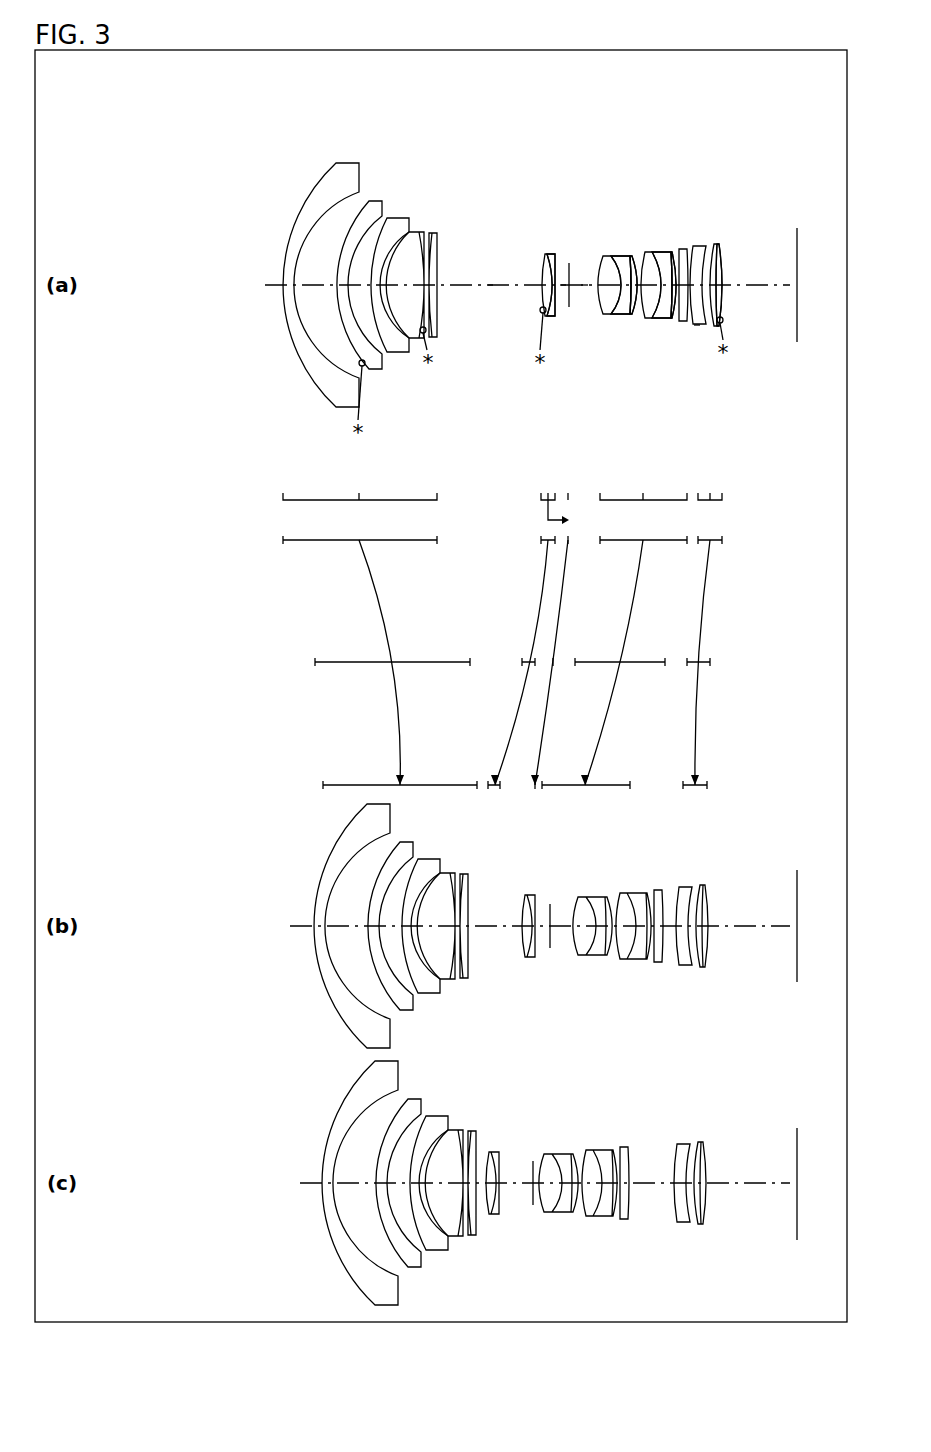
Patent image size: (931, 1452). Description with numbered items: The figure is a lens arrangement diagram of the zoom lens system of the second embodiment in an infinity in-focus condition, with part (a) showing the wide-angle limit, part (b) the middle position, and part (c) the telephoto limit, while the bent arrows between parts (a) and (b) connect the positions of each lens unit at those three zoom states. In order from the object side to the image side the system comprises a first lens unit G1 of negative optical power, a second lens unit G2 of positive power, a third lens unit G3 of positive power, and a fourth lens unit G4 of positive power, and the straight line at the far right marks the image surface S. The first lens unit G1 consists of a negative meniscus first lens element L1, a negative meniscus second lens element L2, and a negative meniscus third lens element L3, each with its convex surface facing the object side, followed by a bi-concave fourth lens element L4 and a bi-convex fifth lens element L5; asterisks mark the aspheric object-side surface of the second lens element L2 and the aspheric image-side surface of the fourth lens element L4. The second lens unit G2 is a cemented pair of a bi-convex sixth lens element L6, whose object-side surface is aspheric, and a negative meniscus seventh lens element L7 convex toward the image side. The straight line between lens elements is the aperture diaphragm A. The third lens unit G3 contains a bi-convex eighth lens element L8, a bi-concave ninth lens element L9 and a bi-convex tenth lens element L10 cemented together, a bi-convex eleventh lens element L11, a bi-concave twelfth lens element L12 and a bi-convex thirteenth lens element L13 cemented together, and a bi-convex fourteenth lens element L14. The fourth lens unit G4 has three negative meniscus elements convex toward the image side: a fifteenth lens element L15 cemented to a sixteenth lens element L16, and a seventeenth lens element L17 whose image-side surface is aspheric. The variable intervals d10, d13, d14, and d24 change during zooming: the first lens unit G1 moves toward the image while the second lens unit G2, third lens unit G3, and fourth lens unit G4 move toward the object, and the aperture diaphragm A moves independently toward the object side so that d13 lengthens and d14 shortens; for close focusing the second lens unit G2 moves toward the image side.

The first lens element L1 is at (340, 165).
The second lens element L2 is at (368, 203).
The third lens element L3 is at (397, 223).
The fourth lens element L4 is at (418, 237).
The fifth lens element L5 is at (433, 240).
The sixth lens element L6 is at (547, 262).
The seventh lens element L7 is at (552, 257).
The aperture diaphragm A is at (568, 265).
The eighth lens element L8 is at (605, 258).
The ninth lens element L9 is at (617, 257).
The tenth lens element L10 is at (630, 257).
The eleventh lens element L11 is at (645, 255).
The twelfth lens element L12 is at (657, 253).
The thirteenth lens element L13 is at (670, 253).
The fourteenth lens element L14 is at (683, 250).
The fifteenth lens element L15 is at (695, 247).
The sixteenth lens element L16 is at (707, 245).
The seventeenth lens element L17 is at (720, 245).
The image surface S is at (802, 257).
The variable air space d10 is at (490, 285).
The variable air space d13 is at (563, 285).
The variable air space d14 is at (584, 285).
The variable air space d24 is at (697, 325).
The first lens unit G1 is at (380, 630).
The second lens unit G2 is at (533, 630).
The third lens unit G3 is at (614, 630).
The fourth lens unit G4 is at (711, 630).